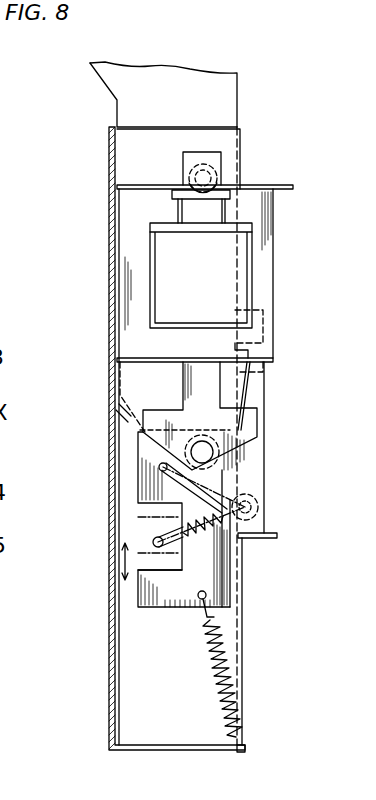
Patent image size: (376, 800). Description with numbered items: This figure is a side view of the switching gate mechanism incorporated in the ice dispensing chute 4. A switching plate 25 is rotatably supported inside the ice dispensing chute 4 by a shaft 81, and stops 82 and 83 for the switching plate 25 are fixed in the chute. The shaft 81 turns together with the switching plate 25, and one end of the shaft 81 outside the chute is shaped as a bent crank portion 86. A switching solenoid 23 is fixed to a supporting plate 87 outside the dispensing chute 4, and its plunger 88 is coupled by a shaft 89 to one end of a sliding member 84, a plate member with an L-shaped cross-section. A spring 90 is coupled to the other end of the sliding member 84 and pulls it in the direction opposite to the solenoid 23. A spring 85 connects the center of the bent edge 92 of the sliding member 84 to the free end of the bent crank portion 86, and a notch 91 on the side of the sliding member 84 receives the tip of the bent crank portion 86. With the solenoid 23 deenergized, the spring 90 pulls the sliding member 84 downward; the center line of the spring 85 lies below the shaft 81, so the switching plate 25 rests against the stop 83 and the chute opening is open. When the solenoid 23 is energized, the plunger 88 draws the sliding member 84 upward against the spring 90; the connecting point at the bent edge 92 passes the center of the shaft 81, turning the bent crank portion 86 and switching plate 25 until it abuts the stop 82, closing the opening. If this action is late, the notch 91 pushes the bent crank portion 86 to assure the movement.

The ice dispensing chute 4 is at (223, 138).
The switching solenoid 23 is at (262, 242).
The switching plate 25 is at (118, 462).
The shaft 81 is at (255, 497).
The stop 82 is at (263, 370).
The stop 83 is at (112, 412).
The sliding member 84 is at (210, 590).
The spring 85 is at (212, 537).
The bent crank portion 86 is at (153, 541).
The supporting plate 87 is at (112, 224).
The plunger 88 is at (208, 392).
The shaft 89 is at (210, 453).
The spring 90 is at (227, 668).
The notch 91 is at (152, 567).
The bent edge 92 is at (243, 546).